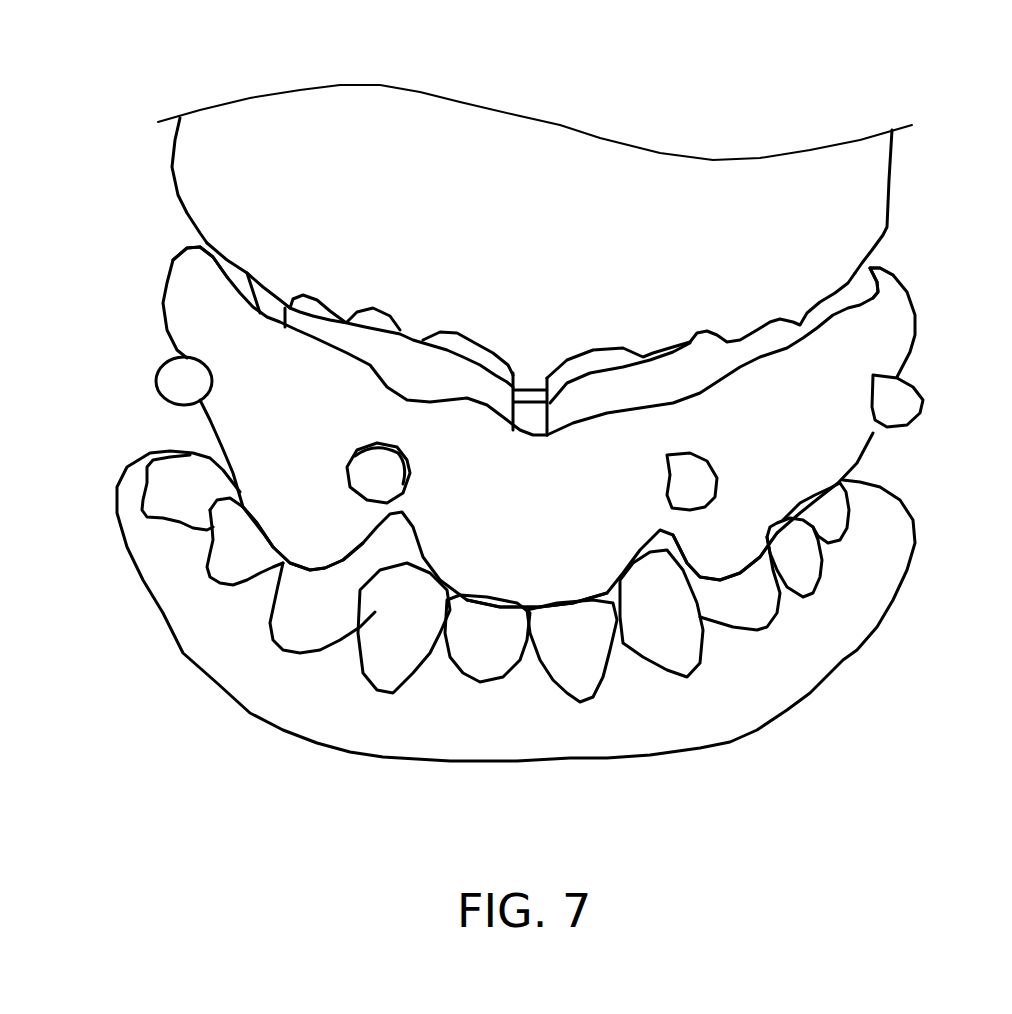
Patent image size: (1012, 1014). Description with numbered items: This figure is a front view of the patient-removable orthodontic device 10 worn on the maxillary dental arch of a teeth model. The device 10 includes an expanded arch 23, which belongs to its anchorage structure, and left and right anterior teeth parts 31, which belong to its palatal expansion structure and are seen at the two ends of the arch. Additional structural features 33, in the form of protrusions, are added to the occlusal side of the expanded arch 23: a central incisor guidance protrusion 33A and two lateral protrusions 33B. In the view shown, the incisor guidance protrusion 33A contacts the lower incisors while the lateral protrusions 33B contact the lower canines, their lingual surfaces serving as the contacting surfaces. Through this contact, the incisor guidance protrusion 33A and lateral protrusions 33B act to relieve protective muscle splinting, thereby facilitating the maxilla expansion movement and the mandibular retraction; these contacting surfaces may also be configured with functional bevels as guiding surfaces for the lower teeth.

The patient-removable orthodontic device 10 is at (46, 42).
The expanded arch 23 is at (890, 335).
The anterior teeth parts 31 is at (313, 330).
The additional structural features 33 is at (520, 666).
The incisor guidance protrusion 33A is at (557, 583).
The lateral protrusions 33B is at (317, 533).